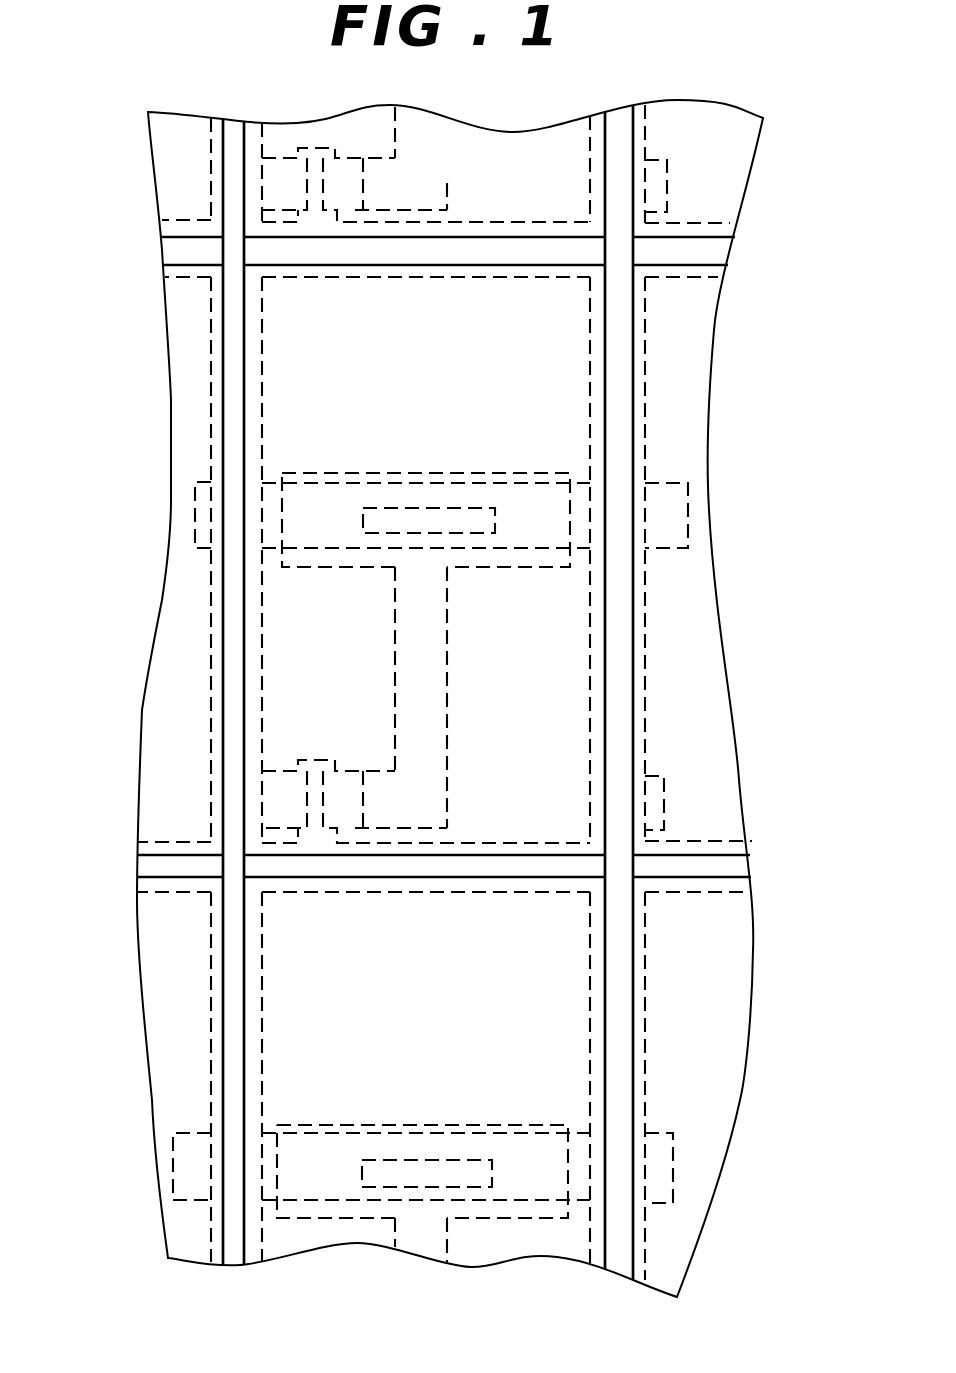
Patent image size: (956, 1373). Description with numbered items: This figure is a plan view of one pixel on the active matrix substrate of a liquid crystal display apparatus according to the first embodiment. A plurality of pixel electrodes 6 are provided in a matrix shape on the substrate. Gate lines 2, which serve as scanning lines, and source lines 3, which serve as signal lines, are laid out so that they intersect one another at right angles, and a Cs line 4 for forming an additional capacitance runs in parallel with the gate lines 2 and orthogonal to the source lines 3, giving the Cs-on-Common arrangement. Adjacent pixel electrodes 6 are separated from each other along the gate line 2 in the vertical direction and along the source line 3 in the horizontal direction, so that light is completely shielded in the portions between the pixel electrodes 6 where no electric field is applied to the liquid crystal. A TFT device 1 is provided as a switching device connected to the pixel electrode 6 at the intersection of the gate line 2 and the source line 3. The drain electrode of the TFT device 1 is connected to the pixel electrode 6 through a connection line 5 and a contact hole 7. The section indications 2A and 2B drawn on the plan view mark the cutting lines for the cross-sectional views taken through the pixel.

The TFT device 1 is at (313, 750).
The gate line 2 is at (736, 866).
The source line 3 is at (617, 364).
The Cs line 4 is at (669, 510).
The connection line 5 is at (435, 650).
The pixel electrode 6 is at (288, 397).
The contact hole 7 is at (488, 517).
The section line 2A- 2A is at (418, 802).
The section line 2B- 2B is at (417, 610).